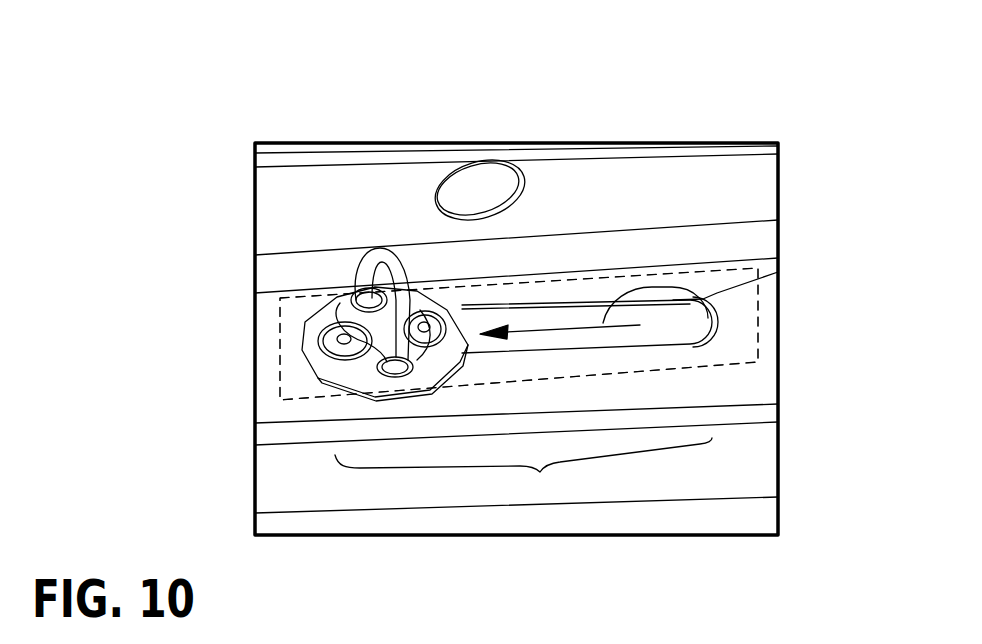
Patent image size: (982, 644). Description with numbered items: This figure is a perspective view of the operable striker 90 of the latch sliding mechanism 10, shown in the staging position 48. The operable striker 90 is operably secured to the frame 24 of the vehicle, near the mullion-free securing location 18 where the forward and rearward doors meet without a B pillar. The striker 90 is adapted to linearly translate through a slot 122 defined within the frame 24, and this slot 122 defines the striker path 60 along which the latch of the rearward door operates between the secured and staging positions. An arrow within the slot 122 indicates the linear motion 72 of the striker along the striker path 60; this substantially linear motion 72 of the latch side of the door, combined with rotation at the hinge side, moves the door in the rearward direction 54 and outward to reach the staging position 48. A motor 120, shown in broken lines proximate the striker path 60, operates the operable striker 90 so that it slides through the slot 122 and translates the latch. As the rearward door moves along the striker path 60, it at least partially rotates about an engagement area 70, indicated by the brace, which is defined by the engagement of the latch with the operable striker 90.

The latch sliding mechanism 10 is at (598, 207).
The mullion-free securing location 18 is at (620, 257).
The frame 24 is at (743, 387).
The staging position 48 is at (350, 277).
The rearward direction 54 is at (533, 337).
The striker path 60 is at (536, 273).
The engagement area 70 is at (523, 471).
The linear motion 72 is at (778, 272).
The operable striker 90 is at (393, 265).
The motor 120 is at (312, 368).
The slot 122 is at (712, 300).